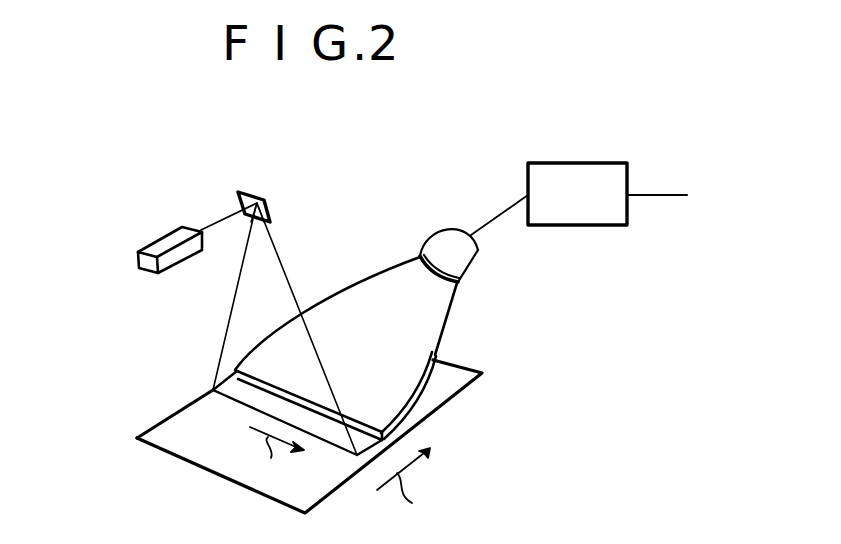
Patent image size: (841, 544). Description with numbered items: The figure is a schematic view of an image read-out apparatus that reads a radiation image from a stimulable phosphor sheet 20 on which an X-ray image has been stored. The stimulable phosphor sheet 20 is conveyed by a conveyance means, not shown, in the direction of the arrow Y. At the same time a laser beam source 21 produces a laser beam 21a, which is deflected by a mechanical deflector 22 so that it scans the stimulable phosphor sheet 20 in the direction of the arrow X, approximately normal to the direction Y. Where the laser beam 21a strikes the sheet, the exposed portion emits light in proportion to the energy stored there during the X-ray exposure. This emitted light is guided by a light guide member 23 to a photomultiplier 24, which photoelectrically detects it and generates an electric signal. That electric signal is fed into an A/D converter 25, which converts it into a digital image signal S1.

The stimulable phosphor sheet 20 is at (440, 398).
The laser beam source 21 is at (156, 241).
The laser beam 21a is at (216, 221).
The mechanical deflector 22 is at (270, 195).
The light guide member 23 is at (364, 306).
The photomultiplier 24 is at (443, 234).
The A/D converter 25 is at (580, 176).
The digital image signal S1 is at (657, 198).